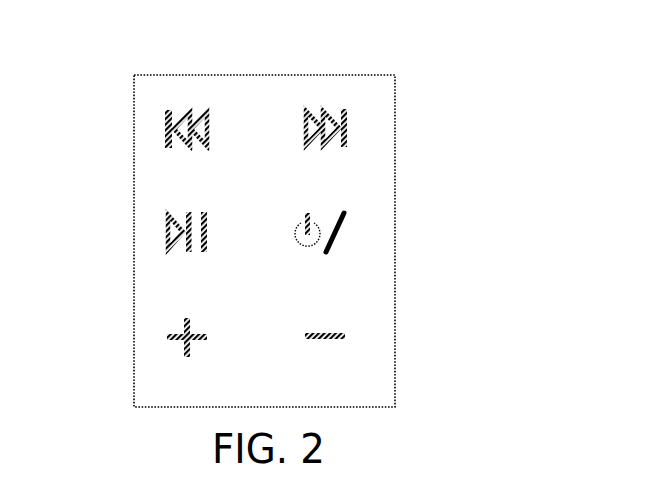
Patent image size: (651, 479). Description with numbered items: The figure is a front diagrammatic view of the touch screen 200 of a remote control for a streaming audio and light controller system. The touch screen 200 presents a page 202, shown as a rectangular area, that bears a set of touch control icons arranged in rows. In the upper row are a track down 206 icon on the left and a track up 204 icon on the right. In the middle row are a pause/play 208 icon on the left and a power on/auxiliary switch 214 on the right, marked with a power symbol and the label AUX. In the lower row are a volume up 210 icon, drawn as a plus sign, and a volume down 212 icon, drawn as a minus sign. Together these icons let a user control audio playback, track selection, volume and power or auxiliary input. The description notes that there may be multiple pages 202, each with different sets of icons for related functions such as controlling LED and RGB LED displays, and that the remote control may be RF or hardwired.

The touch screen 200 is at (170, 58).
The page 202 is at (382, 110).
The track up icon 204 is at (307, 113).
The track down icon 206 is at (170, 133).
The pause/play icon 208 is at (172, 234).
The volume up icon 210 is at (187, 337).
The volume down icon 212 is at (328, 340).
The power on/auxiliary switch 214 is at (340, 232).